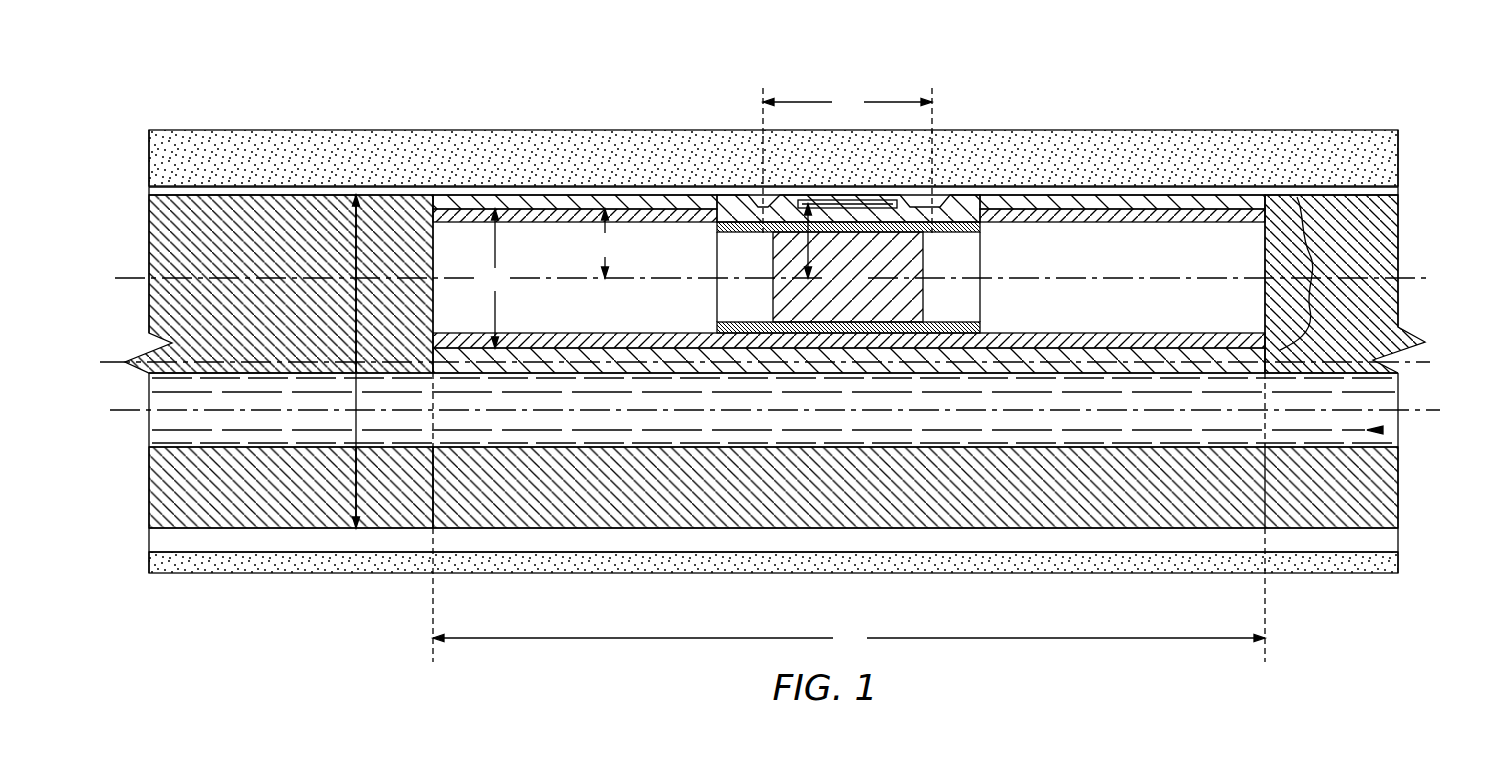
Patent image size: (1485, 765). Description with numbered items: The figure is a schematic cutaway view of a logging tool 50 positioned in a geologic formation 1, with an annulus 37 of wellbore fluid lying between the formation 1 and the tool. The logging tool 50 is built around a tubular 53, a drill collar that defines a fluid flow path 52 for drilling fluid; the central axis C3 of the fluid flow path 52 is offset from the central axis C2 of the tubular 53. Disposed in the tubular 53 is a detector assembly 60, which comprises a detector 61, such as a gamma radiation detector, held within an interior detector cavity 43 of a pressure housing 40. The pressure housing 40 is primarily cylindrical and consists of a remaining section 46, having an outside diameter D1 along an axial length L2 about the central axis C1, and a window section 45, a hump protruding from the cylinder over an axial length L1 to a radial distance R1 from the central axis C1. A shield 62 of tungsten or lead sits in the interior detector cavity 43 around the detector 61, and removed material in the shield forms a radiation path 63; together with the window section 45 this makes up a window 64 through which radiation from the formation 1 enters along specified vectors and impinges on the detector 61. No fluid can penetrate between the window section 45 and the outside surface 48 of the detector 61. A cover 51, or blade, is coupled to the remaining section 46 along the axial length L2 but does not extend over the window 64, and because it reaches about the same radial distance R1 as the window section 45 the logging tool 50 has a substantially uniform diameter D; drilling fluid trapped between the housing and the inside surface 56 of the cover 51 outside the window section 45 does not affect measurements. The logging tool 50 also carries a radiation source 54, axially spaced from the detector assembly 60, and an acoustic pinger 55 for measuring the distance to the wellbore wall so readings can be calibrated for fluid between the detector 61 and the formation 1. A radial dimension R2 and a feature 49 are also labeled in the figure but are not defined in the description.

The geologic formation 1 is at (1087, 155).
The annulus 37 is at (1400, 192).
The pressure housing 40 is at (1339, 251).
The interior detector cavity 43 is at (1237, 243).
The window section 45 is at (930, 200).
The remaining section 46 is at (662, 197).
The outside surface of the detector 48 is at (860, 228).
The liner inner surface 49 is at (1130, 333).
The logging tool 50 is at (1200, 66).
The cover 51 is at (470, 200).
The fluid flow path 52 is at (1398, 440).
The tubular 53 is at (1383, 497).
The radiation source 54 is at (283, 261).
The acoustic pinger 55 is at (178, 261).
The inside surface of the blade/cover 56 is at (539, 213).
The detector assembly 60 is at (1311, 275).
The detector 61 is at (837, 289).
The shield 62 is at (958, 306).
The radiation path 63 is at (840, 222).
The window 64 is at (901, 189).
The central axis of pressure housing C1 is at (1157, 279).
The central axis of tubular C2 is at (1410, 363).
The central axis of fluid flow path C3 is at (1408, 411).
The diameter of logging tool D is at (357, 361).
The outside diameter of remaining section D1 is at (495, 278).
The radial distance of window section R1 is at (800, 243).
The radius R2 is at (605, 243).
The axial length of window section L1 is at (847, 160).
The axial length of remaining section L2 is at (849, 428).